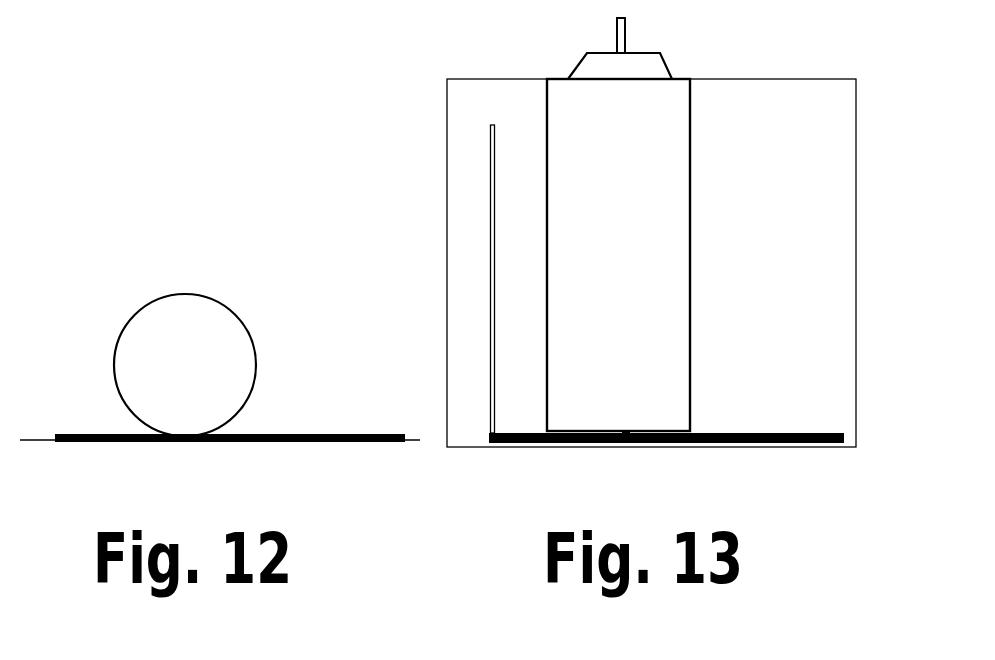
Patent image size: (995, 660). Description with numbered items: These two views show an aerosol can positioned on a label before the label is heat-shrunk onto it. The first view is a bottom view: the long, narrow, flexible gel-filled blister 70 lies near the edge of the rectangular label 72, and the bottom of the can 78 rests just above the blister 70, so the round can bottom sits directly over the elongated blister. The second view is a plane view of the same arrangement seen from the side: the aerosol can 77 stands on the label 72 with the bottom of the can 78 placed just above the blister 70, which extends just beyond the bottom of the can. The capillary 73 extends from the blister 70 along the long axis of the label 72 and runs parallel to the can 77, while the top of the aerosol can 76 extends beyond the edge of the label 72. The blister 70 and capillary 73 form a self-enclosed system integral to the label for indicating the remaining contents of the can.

In FIG. 12, the blister 70 is at (277, 425).
In FIG. 13, the blister 70 is at (798, 419).
In FIG. 12, the label 72 is at (315, 453).
In FIG. 13, the label 72 is at (801, 197).
In FIG. 13, the capillary 73 is at (472, 243).
In FIG. 13, the top of the aerosol can 76 is at (556, 57).
In FIG. 13, the aerosol can 77 is at (668, 265).
In FIG. 12, the bottom of the can 78 is at (235, 355).
In FIG. 13, the bottom of the can 78 is at (640, 448).